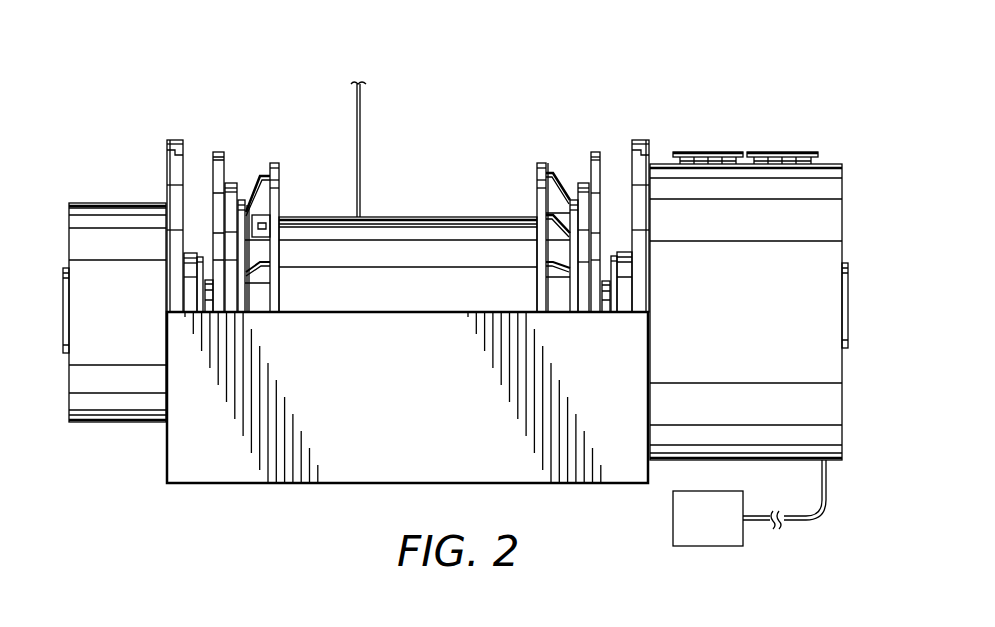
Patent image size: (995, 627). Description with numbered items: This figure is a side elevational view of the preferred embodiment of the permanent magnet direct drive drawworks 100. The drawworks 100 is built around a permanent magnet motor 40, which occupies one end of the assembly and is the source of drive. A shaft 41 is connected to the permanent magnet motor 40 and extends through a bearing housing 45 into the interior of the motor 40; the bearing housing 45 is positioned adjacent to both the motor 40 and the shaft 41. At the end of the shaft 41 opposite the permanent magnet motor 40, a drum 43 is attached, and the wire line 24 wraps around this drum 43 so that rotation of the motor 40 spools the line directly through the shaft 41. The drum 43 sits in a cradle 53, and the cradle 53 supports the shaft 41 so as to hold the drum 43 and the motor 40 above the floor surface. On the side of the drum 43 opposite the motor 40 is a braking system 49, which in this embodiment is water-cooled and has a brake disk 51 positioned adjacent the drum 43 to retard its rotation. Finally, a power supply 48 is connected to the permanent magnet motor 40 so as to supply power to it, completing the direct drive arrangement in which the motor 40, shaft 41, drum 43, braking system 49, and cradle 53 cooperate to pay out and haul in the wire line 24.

The permanent magnet direct drive drawworks 100 is at (249, 80).
The wire line 24 is at (360, 142).
The permanent magnet motor 40 is at (818, 165).
The shaft 41 is at (208, 280).
The drum 43 is at (432, 218).
The bearing housing 45 is at (625, 252).
The power supply 48 is at (735, 546).
The braking system 49 is at (110, 203).
The brake disk 51 is at (222, 152).
The cradle 53 is at (167, 141).